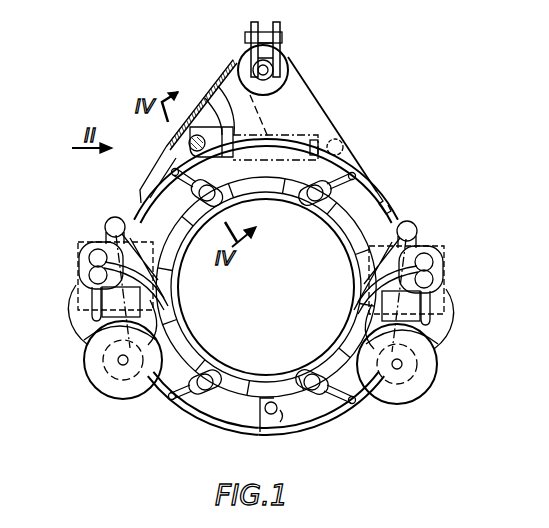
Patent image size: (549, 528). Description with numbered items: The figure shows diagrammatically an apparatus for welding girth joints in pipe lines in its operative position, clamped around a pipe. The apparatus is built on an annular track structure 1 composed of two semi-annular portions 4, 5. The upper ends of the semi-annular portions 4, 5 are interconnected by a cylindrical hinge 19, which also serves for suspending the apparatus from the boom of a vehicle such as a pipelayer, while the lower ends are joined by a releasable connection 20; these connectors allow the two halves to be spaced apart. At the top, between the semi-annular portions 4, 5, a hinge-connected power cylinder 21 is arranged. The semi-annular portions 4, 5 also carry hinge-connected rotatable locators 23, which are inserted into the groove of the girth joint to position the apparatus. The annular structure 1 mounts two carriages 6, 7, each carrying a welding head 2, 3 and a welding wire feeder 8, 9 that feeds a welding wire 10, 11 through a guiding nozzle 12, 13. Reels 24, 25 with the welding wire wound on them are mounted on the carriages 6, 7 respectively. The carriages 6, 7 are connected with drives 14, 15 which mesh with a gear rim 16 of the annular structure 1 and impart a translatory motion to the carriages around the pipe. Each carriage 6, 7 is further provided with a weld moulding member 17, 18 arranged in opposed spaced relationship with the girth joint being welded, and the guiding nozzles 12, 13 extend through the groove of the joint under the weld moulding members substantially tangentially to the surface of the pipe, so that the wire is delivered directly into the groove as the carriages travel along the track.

The annular track structure 1 is at (372, 224).
The welding head 2 is at (106, 246).
The welding head 3 is at (442, 250).
The semi-annular portion 4 is at (200, 407).
The semi-annular portion 5 is at (316, 410).
The carriage 6 is at (80, 331).
The carriage 7 is at (445, 297).
The welding wire feeder 8 is at (86, 262).
The welding wire feeder 9 is at (445, 272).
The welding wire 10 is at (78, 322).
The welding wire 11 is at (445, 350).
The guiding nozzle 12 is at (137, 247).
The guiding nozzle 13 is at (360, 278).
The drive 14 is at (88, 300).
The drive 15 is at (440, 320).
The gear rim 16 is at (391, 188).
The weld moulding member 17 is at (172, 327).
The weld moulding member 18 is at (347, 342).
The cylindrical hinge 19 is at (270, 72).
The releasable connection 20 is at (270, 402).
The power cylinder 21 is at (215, 100).
The rotatable locator 23 is at (175, 172).
The reel 24 is at (110, 380).
The reel 25 is at (418, 377).